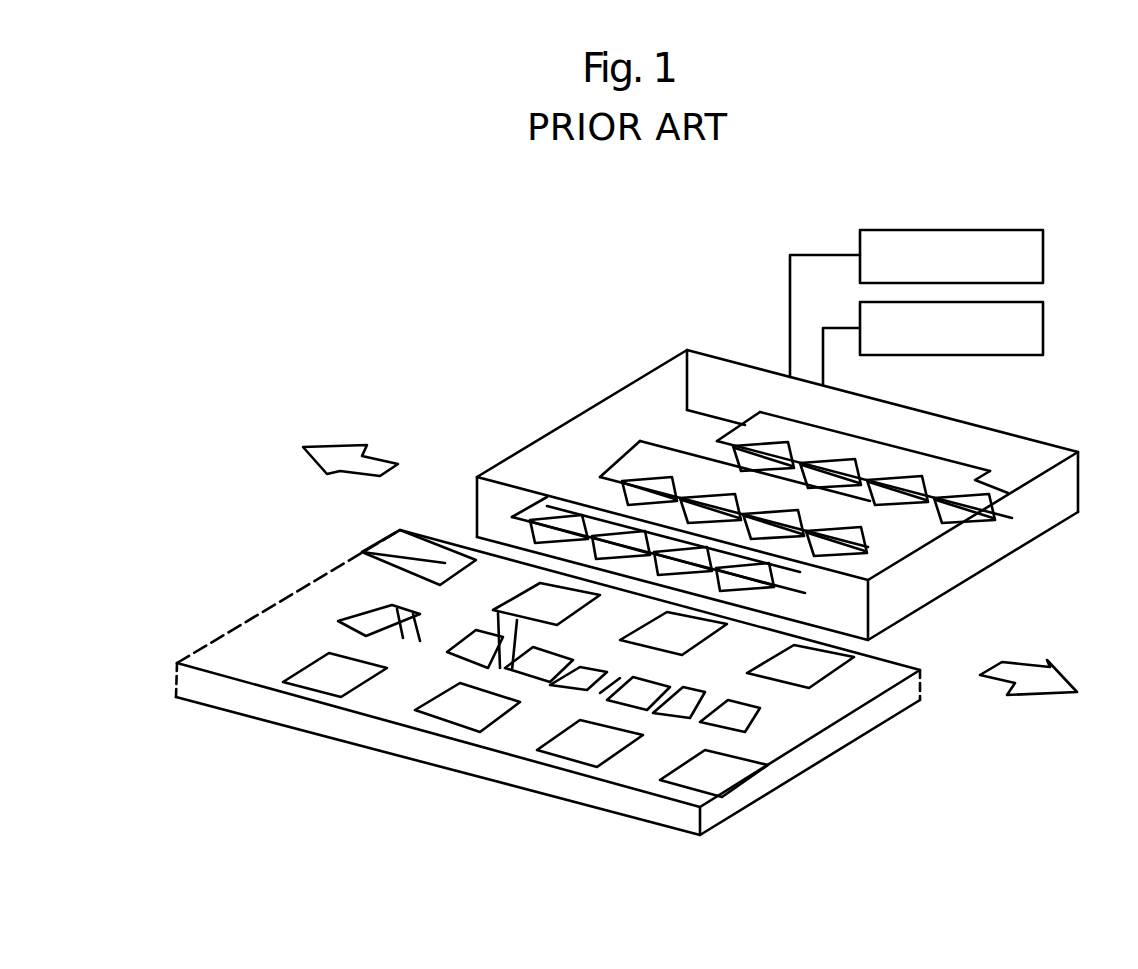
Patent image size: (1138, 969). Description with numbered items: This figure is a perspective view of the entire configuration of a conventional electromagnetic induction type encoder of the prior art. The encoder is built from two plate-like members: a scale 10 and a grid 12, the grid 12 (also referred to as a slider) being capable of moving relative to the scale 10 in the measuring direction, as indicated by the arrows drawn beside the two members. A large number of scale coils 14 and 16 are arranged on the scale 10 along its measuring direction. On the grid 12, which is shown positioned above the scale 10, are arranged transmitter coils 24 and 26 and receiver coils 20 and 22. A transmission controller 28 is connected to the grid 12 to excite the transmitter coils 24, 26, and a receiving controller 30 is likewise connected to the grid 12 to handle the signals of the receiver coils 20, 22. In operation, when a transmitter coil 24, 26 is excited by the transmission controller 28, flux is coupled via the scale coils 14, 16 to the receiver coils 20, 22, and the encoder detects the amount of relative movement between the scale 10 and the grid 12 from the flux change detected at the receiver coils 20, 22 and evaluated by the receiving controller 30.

The scale 10 is at (227, 705).
The grid 12 is at (664, 418).
The scale coil 14 is at (390, 610).
The scale coil 16 is at (362, 552).
The receiver coil 20 is at (580, 500).
The receiver coil 22 is at (528, 543).
The transmitter coil 24 is at (547, 515).
The transmitter coil 26 is at (600, 472).
The transmission controller 28 is at (1017, 230).
The receiving controller 30 is at (1043, 327).